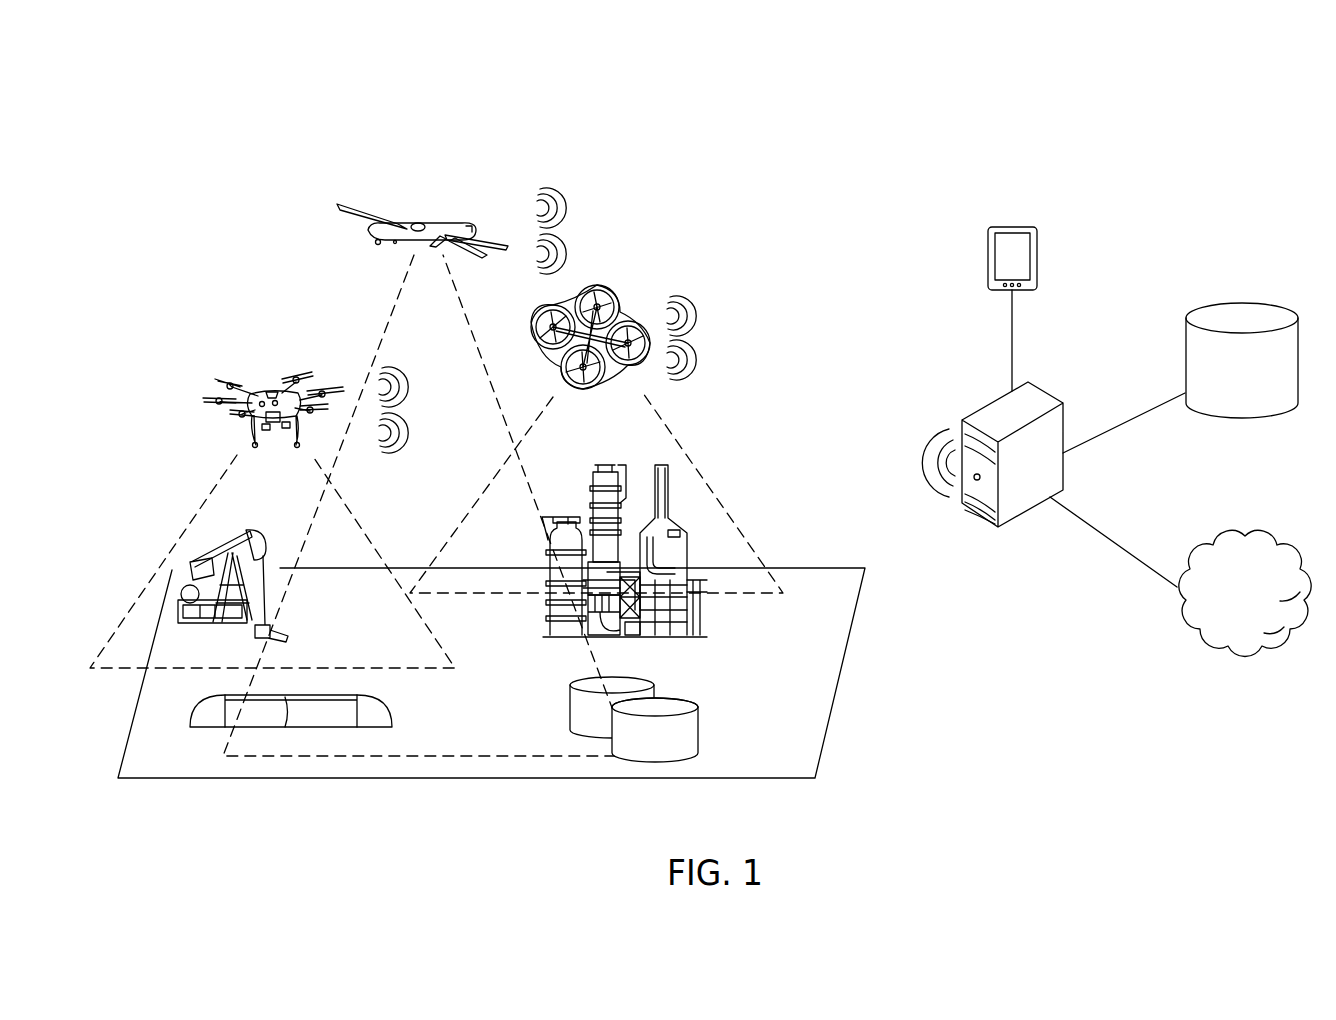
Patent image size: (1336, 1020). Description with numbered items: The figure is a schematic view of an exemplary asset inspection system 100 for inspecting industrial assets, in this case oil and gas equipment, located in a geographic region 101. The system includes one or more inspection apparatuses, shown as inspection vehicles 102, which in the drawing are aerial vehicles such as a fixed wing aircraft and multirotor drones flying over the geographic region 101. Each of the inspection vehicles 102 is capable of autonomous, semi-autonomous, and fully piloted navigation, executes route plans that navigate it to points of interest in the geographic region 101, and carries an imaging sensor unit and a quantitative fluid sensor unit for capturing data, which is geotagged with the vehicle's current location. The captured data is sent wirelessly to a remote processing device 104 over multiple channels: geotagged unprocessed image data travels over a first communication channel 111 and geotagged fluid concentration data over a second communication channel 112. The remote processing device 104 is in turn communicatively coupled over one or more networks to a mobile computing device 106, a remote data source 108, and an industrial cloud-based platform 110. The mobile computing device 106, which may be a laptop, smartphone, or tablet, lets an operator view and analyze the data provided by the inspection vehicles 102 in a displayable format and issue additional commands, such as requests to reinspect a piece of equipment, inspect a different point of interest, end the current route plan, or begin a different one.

The asset inspection system 100 is at (1090, 112).
The geographic region 101 is at (838, 703).
The inspection vehicles 102 is at (433, 220).
The remote processing device 104 is at (982, 402).
The mobile computing device 106 is at (1011, 226).
The remote data source 108 is at (1238, 303).
The industrial cloud-based platform 110 is at (1257, 526).
The first communication channel 111 is at (566, 206).
The second communication channel 112 is at (566, 252).